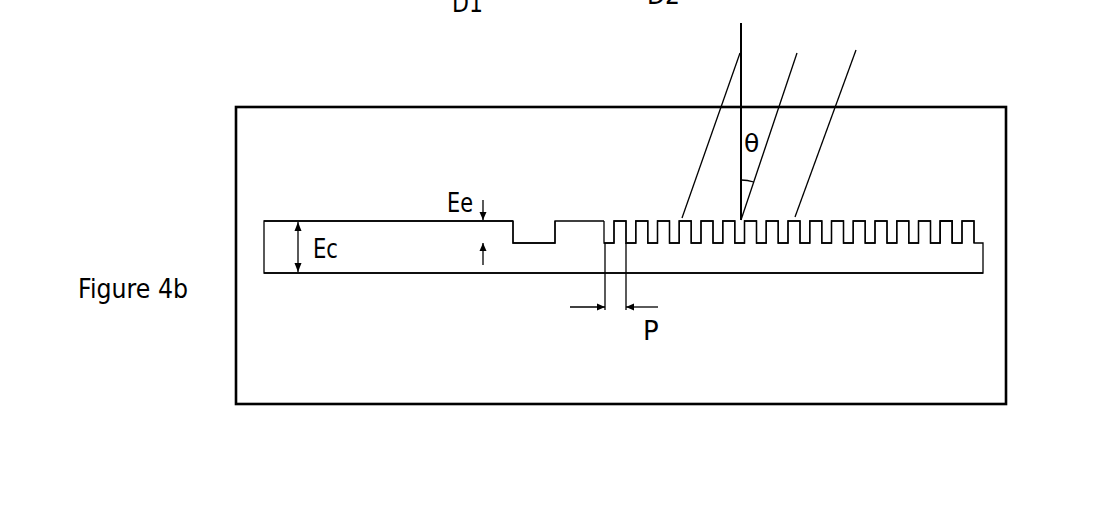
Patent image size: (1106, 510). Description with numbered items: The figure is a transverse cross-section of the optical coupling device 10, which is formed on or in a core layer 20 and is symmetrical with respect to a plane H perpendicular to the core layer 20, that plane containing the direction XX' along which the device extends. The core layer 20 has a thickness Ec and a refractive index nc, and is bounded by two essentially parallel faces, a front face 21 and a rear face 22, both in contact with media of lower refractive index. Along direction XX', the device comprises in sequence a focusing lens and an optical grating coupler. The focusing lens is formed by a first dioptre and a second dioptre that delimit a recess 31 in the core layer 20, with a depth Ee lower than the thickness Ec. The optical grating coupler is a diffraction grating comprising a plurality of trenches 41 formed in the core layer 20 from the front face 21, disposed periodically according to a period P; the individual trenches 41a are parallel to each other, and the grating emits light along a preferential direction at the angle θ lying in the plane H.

The optical coupling device 10 is at (207, 100).
The core layer 20 is at (263, 232).
The front face 21 is at (423, 220).
The rear face 22 is at (420, 273).
The recess 31 is at (535, 243).
The plurality of trenches 41 is at (852, 215).
The trench 41a is at (953, 220).
The plane of symmetry H is at (1007, 160).